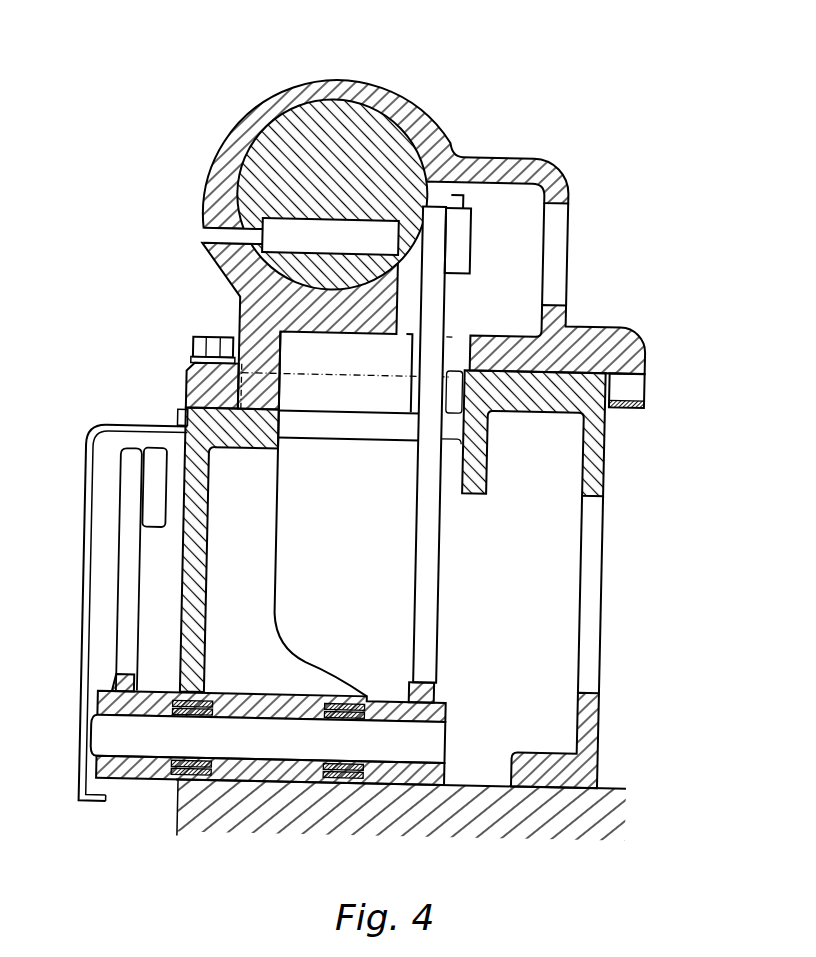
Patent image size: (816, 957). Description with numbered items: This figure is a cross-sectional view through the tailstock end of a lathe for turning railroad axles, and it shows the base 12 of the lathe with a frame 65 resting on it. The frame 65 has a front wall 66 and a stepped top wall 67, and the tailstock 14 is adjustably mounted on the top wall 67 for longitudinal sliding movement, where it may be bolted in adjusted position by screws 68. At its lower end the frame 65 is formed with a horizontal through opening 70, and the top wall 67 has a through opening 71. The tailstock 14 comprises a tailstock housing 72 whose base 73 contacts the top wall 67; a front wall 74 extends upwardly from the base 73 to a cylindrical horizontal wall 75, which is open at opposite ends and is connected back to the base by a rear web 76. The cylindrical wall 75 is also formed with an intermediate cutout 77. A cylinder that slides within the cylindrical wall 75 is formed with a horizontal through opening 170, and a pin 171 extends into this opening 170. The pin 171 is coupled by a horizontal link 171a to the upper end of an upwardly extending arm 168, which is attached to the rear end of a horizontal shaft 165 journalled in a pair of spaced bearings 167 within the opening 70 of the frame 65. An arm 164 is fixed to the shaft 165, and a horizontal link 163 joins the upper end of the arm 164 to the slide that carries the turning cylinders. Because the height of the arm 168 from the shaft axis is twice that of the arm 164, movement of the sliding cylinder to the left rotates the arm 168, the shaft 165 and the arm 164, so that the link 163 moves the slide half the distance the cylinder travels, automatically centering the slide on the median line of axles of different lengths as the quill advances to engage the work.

The base 12 is at (193, 819).
The tailstock 14 is at (369, 220).
The frame 65 is at (622, 486).
The front wall 66 is at (210, 578).
The stepped top wall 67 is at (528, 395).
The screws 68 is at (197, 340).
The horizontal through opening 70 is at (289, 715).
The through opening 71 is at (341, 429).
The tailstock housing 72 is at (424, 116).
The base 73 is at (592, 333).
The front wall 74 is at (237, 330).
The cylindrical horizontal wall 75 is at (385, 221).
The rear web 76 is at (510, 164).
The intermediate cutout 77 is at (462, 195).
The horizontal link 163 is at (154, 528).
The arm 164 is at (123, 586).
The horizontal shaft 165 is at (446, 740).
The bearings 167 is at (212, 704).
The upwardly extending arm 168 is at (437, 592).
The horizontal through opening 170 is at (340, 212).
The pin 171 is at (334, 251).
The horizontal link 171a is at (462, 270).